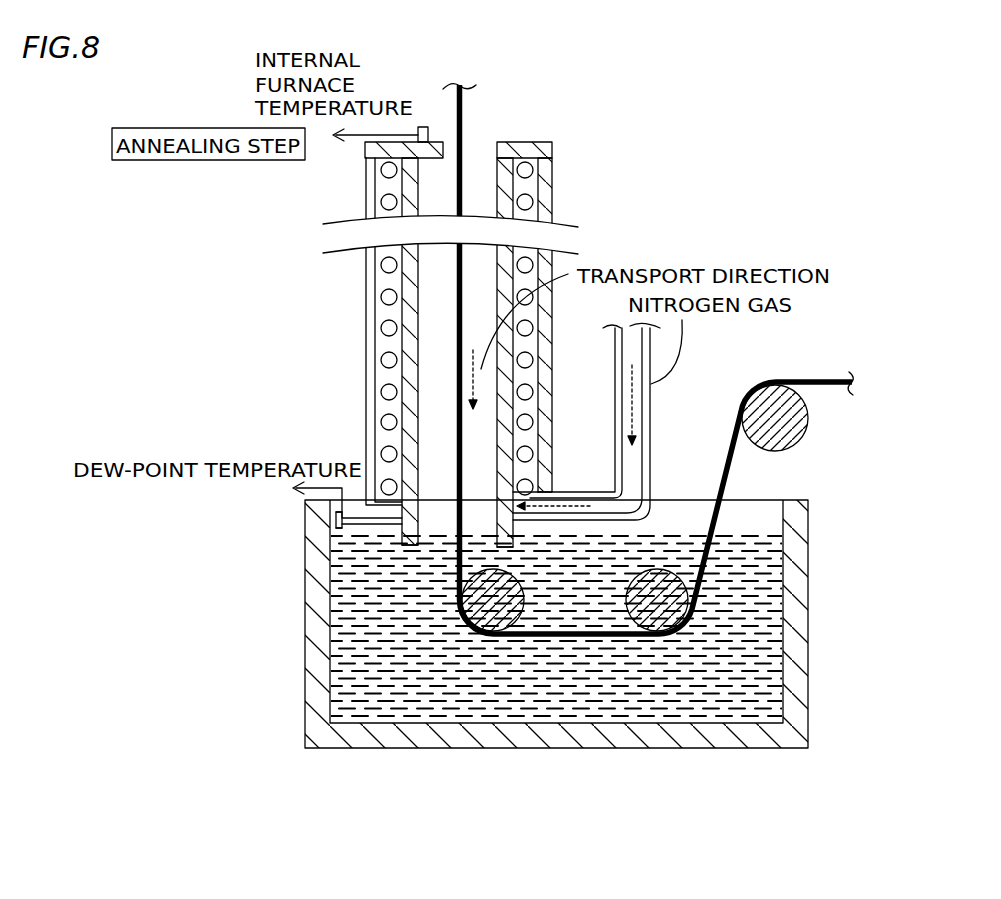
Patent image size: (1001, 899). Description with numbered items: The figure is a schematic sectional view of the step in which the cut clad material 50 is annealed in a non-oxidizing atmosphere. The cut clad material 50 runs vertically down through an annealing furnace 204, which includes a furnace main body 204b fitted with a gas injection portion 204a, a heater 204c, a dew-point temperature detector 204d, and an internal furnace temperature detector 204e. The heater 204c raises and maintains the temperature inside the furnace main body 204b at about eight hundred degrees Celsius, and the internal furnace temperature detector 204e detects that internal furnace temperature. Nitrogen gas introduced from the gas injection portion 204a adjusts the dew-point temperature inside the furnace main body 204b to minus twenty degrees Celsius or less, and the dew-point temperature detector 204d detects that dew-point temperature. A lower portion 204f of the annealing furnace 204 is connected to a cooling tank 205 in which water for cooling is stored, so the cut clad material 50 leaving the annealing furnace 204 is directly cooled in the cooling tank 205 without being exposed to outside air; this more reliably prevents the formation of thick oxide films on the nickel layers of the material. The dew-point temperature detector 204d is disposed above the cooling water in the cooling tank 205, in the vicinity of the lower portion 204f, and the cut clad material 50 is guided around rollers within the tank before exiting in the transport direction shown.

The annealing furnace 204 is at (570, 102).
The gas injection portion 204a is at (664, 413).
The furnace main body 204b is at (413, 434).
The heater 204c is at (522, 152).
The dew-point temperature detector 204d is at (336, 518).
The internal furnace temperature detector 204e is at (420, 126).
The lower portion 204f is at (400, 543).
The cut clad material 50 is at (827, 378).
The cooling tank 205 is at (830, 487).